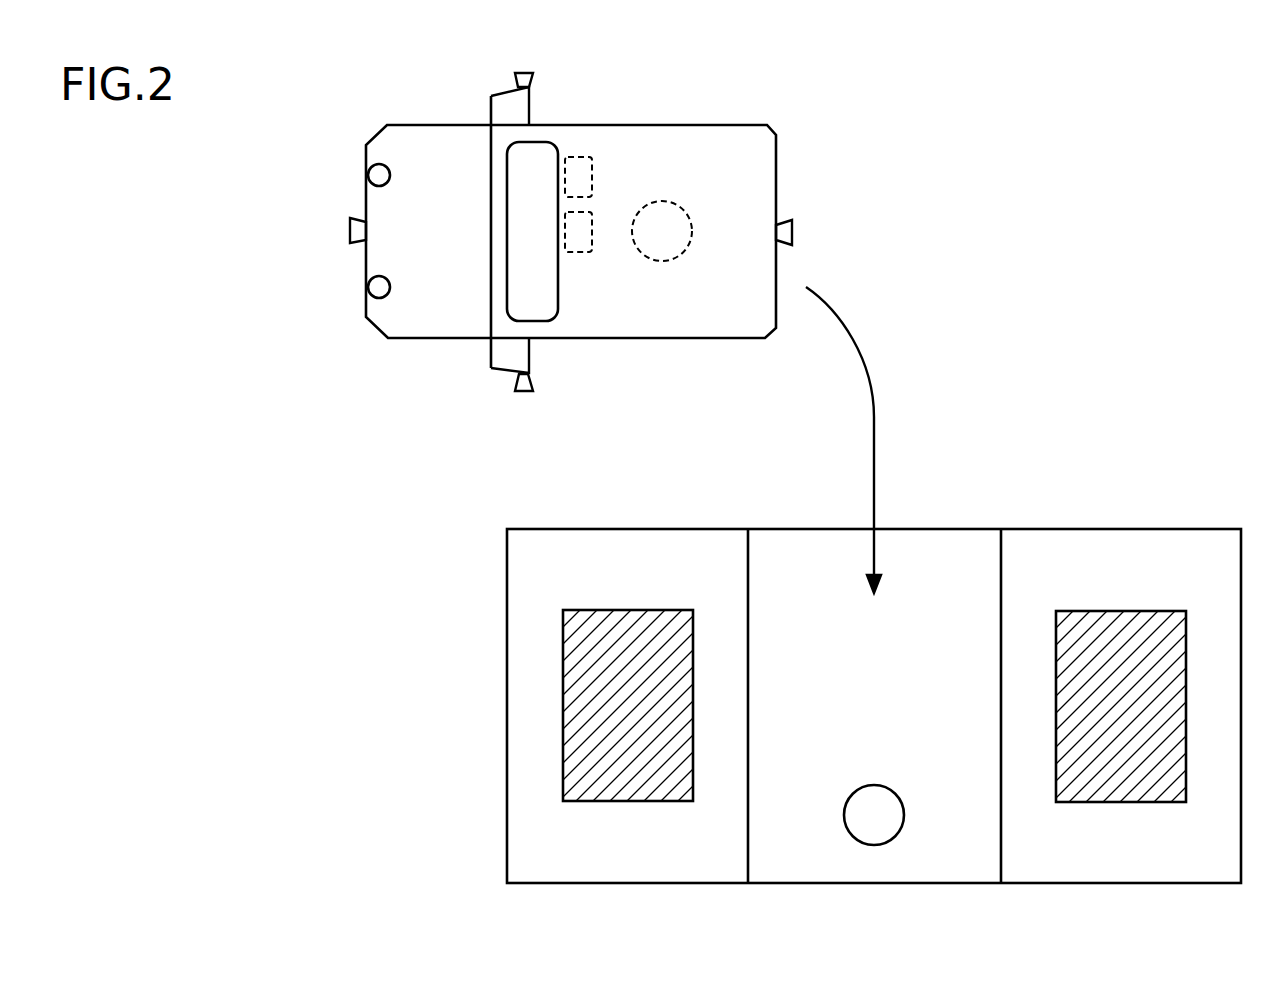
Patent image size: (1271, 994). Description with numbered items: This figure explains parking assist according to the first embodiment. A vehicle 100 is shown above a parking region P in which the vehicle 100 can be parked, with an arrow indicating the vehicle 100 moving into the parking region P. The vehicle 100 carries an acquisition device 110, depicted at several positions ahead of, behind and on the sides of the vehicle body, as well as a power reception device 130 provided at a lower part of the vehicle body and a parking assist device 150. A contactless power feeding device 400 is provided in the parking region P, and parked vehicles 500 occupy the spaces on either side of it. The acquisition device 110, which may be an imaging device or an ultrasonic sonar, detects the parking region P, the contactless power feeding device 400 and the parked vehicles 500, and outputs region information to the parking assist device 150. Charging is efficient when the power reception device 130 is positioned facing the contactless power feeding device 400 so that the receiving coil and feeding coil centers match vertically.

The vehicle 100 is at (382, 128).
The acquisition device 110 is at (525, 72).
The power reception device 130 is at (592, 222).
The parking assist device 150 is at (580, 157).
The contactless power feeding device 400 is at (878, 845).
The parked vehicle 500 is at (628, 790).
The parking region P is at (810, 883).